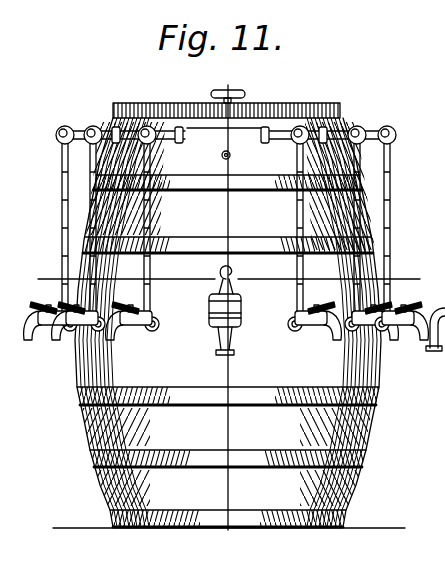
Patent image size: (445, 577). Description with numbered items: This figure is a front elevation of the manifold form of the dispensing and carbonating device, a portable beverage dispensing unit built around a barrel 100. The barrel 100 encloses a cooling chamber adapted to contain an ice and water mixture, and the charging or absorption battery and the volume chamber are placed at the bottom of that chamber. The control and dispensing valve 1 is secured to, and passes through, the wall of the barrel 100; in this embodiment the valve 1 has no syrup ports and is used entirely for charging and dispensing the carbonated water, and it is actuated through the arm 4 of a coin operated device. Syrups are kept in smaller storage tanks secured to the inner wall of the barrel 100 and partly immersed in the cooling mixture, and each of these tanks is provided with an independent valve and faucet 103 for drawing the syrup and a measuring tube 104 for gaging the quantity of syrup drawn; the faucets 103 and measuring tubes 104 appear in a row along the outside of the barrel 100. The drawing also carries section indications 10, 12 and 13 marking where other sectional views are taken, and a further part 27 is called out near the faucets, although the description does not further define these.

The control and dispensing valve 1 is at (238, 327).
The arm 4 is at (214, 270).
The section line 10 is at (340, 211).
The section line 12- 12 is at (228, 311).
The section line 13- 13 is at (425, 282).
The pipe stem 27 is at (433, 328).
The barrel 100 is at (229, 315).
The valve and faucet 103 is at (82, 337).
The measuring tube 104 is at (362, 216).